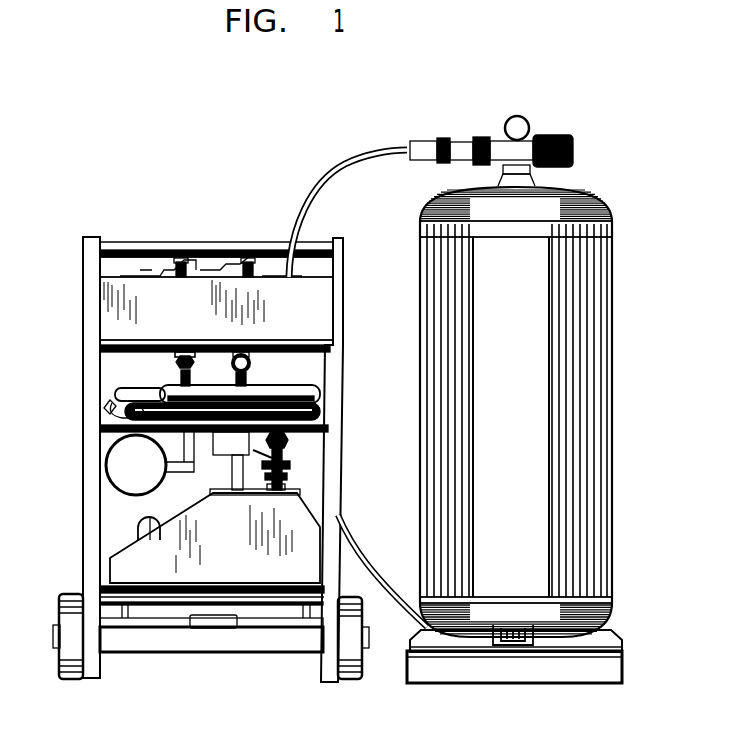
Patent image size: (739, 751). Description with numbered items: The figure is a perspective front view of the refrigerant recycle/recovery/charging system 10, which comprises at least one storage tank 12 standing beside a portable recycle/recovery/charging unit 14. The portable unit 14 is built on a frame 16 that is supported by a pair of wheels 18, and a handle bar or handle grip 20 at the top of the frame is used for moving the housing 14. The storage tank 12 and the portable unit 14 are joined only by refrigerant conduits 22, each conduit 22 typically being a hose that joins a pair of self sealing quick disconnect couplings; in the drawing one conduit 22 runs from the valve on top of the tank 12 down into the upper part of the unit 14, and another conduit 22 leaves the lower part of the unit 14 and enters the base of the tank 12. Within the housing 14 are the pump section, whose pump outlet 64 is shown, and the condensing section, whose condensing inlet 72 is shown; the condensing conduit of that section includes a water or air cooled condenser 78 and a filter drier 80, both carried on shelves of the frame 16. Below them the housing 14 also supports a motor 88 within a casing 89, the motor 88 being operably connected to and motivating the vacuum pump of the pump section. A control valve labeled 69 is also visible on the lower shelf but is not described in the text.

The refrigerant recycle/recovery/charging system 10 is at (85, 178).
The storage tank 12 is at (655, 267).
The portable recycle/recovery/charging unit 14 is at (36, 273).
The frame 16 is at (86, 378).
The wheels 18 is at (58, 612).
The handle bar 20 is at (158, 242).
The refrigerant conduit 22 is at (334, 170).
The pump outlet 64 is at (248, 372).
The control valve 69 is at (287, 461).
The condensing inlet 72 is at (176, 370).
The condenser 78 is at (318, 395).
The filter drier 80 is at (149, 478).
The motor 88 is at (142, 530).
The casing 89 is at (215, 493).